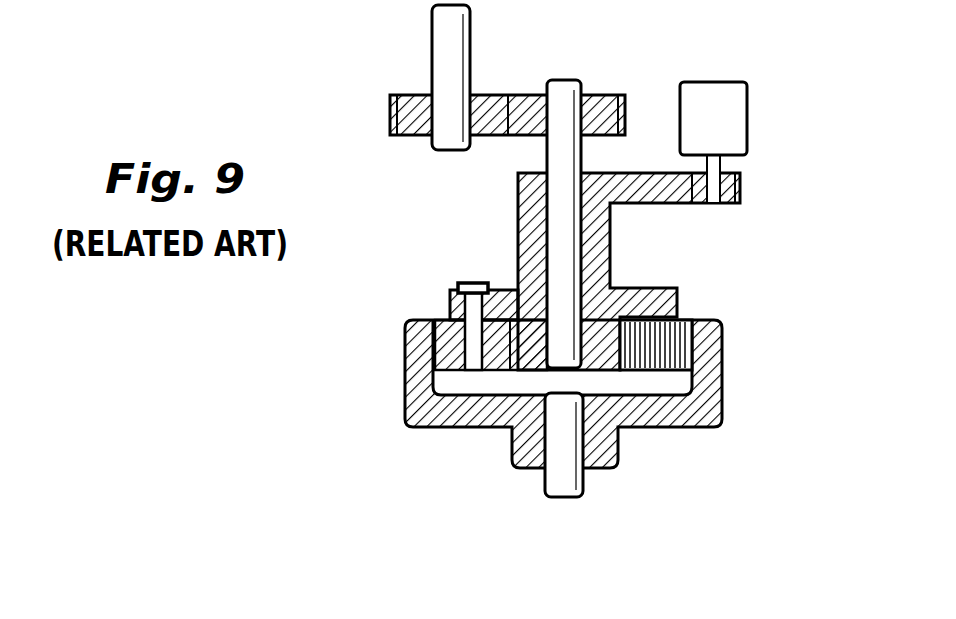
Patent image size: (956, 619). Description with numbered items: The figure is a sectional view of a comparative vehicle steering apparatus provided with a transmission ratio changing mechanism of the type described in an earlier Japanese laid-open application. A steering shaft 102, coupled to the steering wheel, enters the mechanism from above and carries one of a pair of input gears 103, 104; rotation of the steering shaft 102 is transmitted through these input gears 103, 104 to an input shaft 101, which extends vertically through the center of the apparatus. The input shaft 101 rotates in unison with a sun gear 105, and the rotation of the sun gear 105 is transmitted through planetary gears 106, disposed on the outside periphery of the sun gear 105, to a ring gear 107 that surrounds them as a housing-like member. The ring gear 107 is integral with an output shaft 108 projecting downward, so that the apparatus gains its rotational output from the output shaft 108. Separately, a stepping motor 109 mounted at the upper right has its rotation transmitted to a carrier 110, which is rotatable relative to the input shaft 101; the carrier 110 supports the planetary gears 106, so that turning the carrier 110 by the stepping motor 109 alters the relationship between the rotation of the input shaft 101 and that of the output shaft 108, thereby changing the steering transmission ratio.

The input shaft 101 is at (567, 228).
The steering shaft 102 is at (432, 45).
The input gear 103 is at (413, 137).
The input gear 104 is at (535, 93).
The sun gear 105 is at (528, 315).
The planetary gears 106 is at (453, 320).
The ring gear 107 is at (723, 372).
The output shaft 108 is at (543, 483).
The stepping motor 109 is at (747, 105).
The carrier 110 is at (635, 173).